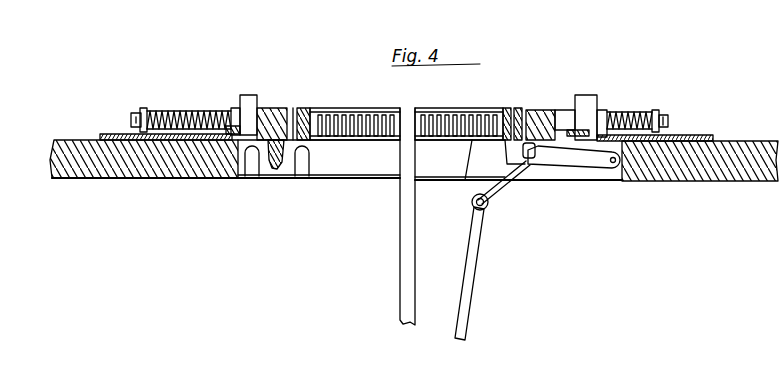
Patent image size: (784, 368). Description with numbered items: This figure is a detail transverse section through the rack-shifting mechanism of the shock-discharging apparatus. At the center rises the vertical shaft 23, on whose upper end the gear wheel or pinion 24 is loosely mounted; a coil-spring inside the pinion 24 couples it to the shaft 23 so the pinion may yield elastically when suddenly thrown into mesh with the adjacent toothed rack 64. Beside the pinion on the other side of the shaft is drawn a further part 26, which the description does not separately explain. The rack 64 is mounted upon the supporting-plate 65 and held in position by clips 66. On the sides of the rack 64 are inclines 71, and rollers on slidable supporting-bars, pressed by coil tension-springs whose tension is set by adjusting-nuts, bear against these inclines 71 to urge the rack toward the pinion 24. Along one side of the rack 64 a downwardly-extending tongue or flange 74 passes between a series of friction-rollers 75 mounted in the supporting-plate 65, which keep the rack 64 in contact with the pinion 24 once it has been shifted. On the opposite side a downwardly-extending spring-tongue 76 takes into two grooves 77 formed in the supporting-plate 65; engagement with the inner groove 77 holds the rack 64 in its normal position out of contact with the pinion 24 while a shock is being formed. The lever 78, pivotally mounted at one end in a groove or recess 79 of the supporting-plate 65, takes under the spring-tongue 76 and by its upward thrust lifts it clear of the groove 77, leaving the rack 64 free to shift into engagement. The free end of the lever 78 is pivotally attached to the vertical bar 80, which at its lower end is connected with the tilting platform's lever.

The vertical shaft 23 is at (390, 216).
The gear wheel or pinion 24 is at (307, 112).
The barrel bearing 26 is at (449, 108).
The rack 64 is at (272, 110).
The supporting-plate 65 is at (155, 168).
The clips 66 is at (236, 153).
The inclines 71 is at (562, 114).
The tongue or flange 74 is at (284, 158).
The friction-rollers 75 is at (298, 178).
The spring-tongue 76 is at (527, 164).
The grooves 77 is at (537, 149).
The lever 78 is at (488, 194).
The groove or recess 79 is at (481, 160).
The vertical bar 80 is at (471, 309).